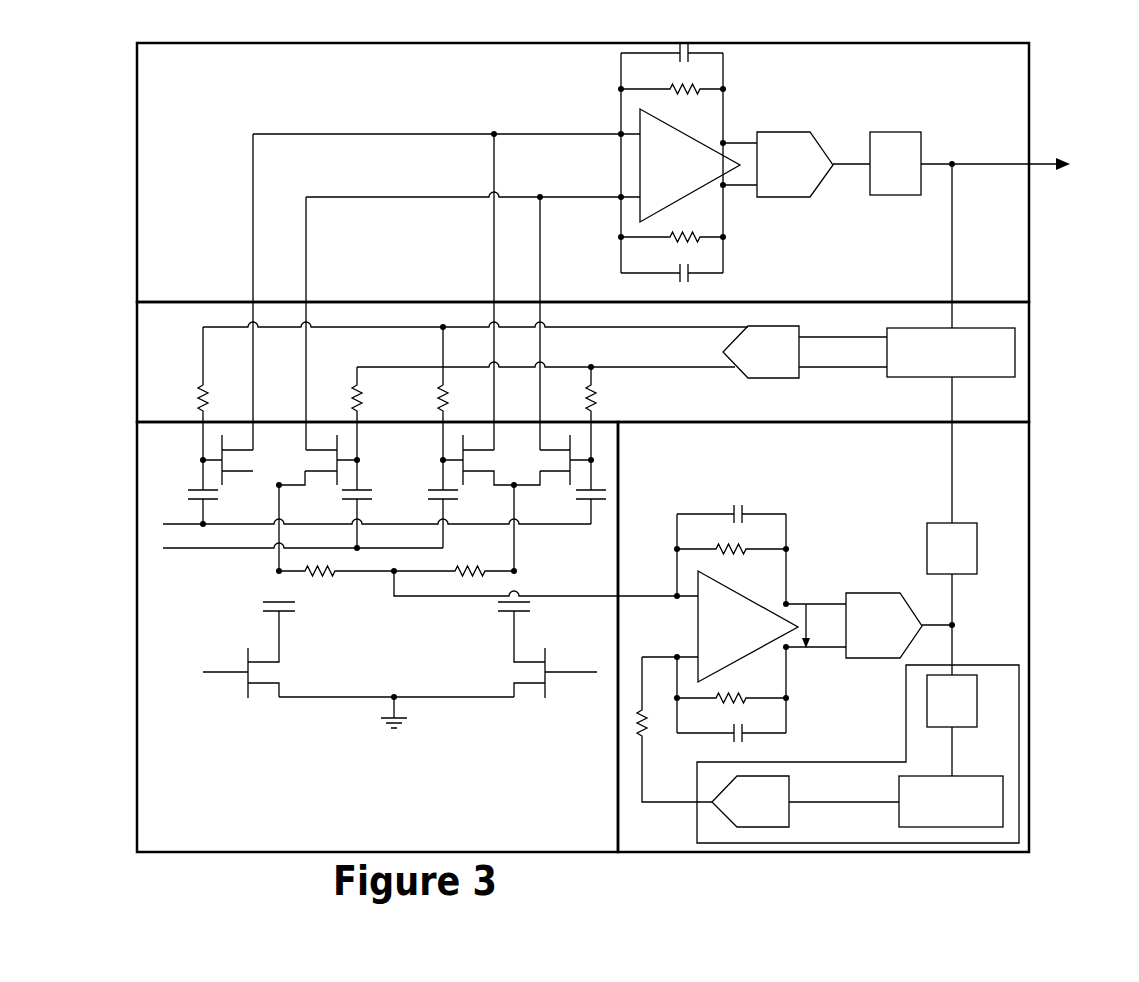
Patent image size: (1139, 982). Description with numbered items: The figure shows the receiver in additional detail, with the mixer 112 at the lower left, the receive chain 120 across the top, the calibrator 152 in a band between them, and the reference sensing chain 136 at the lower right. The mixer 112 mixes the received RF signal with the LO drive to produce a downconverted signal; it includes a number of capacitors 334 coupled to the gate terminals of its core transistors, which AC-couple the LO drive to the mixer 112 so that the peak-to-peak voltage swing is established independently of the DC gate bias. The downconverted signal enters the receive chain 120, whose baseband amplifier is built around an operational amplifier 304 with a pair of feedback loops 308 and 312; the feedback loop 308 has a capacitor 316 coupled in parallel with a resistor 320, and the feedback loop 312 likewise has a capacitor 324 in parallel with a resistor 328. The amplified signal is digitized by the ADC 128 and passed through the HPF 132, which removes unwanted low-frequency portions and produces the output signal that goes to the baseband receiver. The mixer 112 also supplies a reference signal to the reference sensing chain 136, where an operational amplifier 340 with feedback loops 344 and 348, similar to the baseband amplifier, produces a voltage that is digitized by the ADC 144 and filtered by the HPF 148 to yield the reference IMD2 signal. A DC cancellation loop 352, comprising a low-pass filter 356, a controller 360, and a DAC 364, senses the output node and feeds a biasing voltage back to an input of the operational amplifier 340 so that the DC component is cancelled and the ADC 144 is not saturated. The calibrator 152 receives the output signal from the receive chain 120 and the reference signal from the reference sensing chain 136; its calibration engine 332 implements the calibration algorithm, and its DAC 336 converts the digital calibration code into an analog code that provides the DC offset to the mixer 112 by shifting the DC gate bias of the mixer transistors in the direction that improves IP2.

The mixer 112 is at (137, 822).
The receive chain 120 is at (137, 215).
The analog-to-digital converter 128 is at (795, 164).
The high pass filter 132 is at (895, 163).
The reference sensing chain 136 is at (1029, 490).
The analog-to-digital converter 144 is at (884, 625).
The high pass filter 148 is at (952, 548).
The calibrator 152 is at (1029, 362).
The operational amplifier 304 is at (690, 165).
The feedback loop 308 is at (657, 158).
The feedback loop 312 is at (704, 257).
The capacitor 316 is at (714, 69).
The resistor 320 is at (716, 106).
The capacitor 324 is at (714, 287).
The resistor 328 is at (648, 253).
The calibration engine 332 is at (951, 352).
The capacitors 334 is at (176, 486).
The digital-to-analog converter 336 is at (761, 352).
The operational amplifier 340 is at (748, 626).
The feedback loop 344 is at (800, 506).
The feedback loop 348 is at (812, 714).
The DC cancellation loop 352 is at (1019, 712).
The low-pass filter 356 is at (952, 701).
The controller 360 is at (951, 801).
The digital-to-analog converter 364 is at (750, 801).